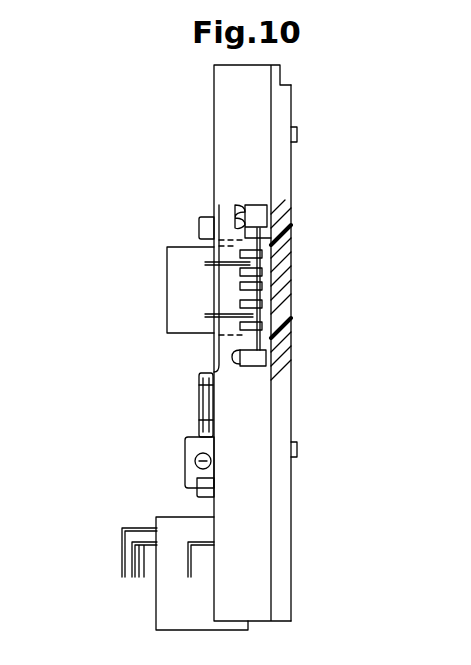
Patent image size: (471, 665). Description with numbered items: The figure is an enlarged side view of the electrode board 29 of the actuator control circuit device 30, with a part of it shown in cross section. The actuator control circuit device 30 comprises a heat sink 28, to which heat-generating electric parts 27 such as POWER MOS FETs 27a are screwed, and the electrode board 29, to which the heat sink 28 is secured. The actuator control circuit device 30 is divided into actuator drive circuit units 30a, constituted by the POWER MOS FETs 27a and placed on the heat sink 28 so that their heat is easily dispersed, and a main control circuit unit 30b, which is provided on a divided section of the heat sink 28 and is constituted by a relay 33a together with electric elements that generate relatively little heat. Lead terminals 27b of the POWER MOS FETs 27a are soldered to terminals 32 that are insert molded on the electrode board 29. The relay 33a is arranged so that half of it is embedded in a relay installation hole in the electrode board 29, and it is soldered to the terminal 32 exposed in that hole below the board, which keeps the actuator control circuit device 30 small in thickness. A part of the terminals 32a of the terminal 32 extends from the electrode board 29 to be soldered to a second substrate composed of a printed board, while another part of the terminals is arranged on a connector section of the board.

The electric parts 27 is at (210, 402).
The POWER MOS FET 27a is at (267, 213).
The lead terminal 27b is at (205, 315).
The heat sink 28 is at (283, 504).
The electrode board 29 is at (258, 547).
The actuator control circuit device 30 is at (230, 210).
The actuator drive circuit unit 30a is at (274, 237).
The main control circuit unit 30b is at (186, 467).
The terminal 32 is at (200, 222).
The terminals 32a is at (188, 577).
The relay 33a is at (175, 265).